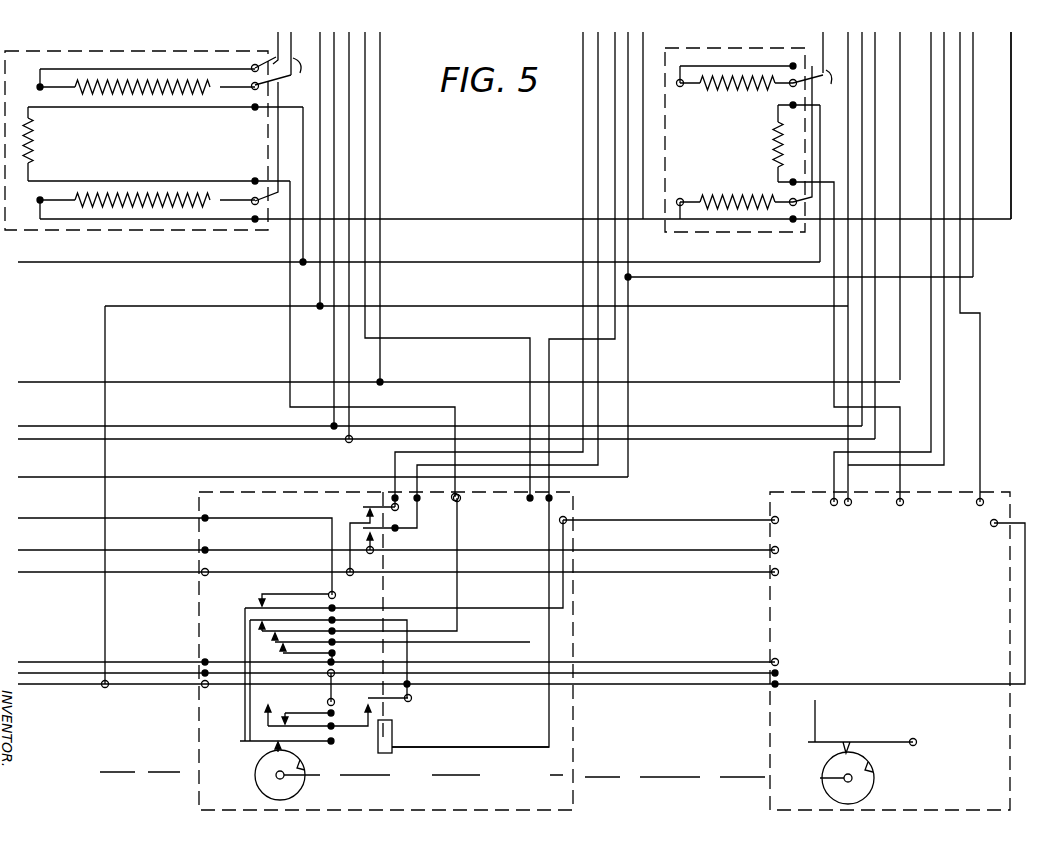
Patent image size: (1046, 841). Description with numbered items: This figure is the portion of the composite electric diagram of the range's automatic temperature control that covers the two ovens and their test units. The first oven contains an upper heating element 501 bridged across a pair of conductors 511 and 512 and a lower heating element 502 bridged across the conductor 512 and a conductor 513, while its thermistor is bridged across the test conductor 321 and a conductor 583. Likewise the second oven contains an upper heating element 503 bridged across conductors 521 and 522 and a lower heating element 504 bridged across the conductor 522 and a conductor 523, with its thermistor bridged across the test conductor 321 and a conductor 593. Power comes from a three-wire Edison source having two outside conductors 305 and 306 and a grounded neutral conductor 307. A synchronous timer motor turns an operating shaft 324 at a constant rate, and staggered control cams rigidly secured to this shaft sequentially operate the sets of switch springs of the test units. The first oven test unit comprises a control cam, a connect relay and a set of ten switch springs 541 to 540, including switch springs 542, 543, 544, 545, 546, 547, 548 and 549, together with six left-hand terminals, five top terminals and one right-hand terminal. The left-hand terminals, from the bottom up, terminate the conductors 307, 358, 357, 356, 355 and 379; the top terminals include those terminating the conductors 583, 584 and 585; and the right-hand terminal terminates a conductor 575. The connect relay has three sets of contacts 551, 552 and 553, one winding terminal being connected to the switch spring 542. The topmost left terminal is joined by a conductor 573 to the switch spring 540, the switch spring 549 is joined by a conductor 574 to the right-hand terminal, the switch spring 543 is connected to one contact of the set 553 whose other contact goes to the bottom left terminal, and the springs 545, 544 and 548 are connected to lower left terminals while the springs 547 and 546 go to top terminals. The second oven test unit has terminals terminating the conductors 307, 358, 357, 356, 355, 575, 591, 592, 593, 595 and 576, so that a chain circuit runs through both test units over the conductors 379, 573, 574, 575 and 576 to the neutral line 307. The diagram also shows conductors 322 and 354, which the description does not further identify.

The upper heating element 501 is at (70, 80).
The lower heating element 502 is at (75, 194).
The upper heating element 503 is at (730, 77).
The lower heating element 504 is at (735, 194).
The conductor 511 is at (273, 52).
The conductor 512 is at (282, 112).
The conductor 513 is at (430, 219).
The conductor 521 is at (807, 43).
The conductor 522 is at (812, 113).
The conductor 523 is at (1012, 185).
The switch spring 540 is at (297, 594).
The switch spring 541 is at (287, 739).
The switch spring 542 is at (318, 717).
The switch spring 543 is at (308, 712).
The switch spring 544 is at (314, 689).
The switch spring 545 is at (307, 651).
The switch spring 546 is at (401, 637).
The switch spring 547 is at (360, 565).
The switch spring 548 is at (328, 674).
The switch spring 549 is at (290, 668).
The contact set 551 is at (363, 514).
The contact set 552 is at (385, 536).
The contact set 553 is at (397, 700).
The conductor 573 is at (274, 517).
The conductor 574 is at (466, 608).
The conductor 575 is at (734, 519).
The conductor 576 is at (900, 603).
The conductor 583 is at (290, 355).
The conductor 584 is at (365, 118).
The conductor 585 is at (577, 337).
The conductor 591 is at (929, 108).
The conductor 592 is at (941, 112).
The conductor 593 is at (833, 345).
The conductor 595 is at (960, 112).
The outside conductor 305 is at (82, 441).
The outside conductor 306 is at (81, 425).
The grounded neutral conductor 307 is at (320, 137).
The test conductor 321 is at (84, 260).
The conductor 322 is at (381, 92).
The operating shaft 324 is at (176, 770).
The conductor 354 is at (80, 476).
The conductor 355 is at (79, 549).
The conductor 356 is at (79, 571).
The conductor 357 is at (79, 661).
The conductor 358 is at (157, 672).
The conductor 379 is at (79, 517).